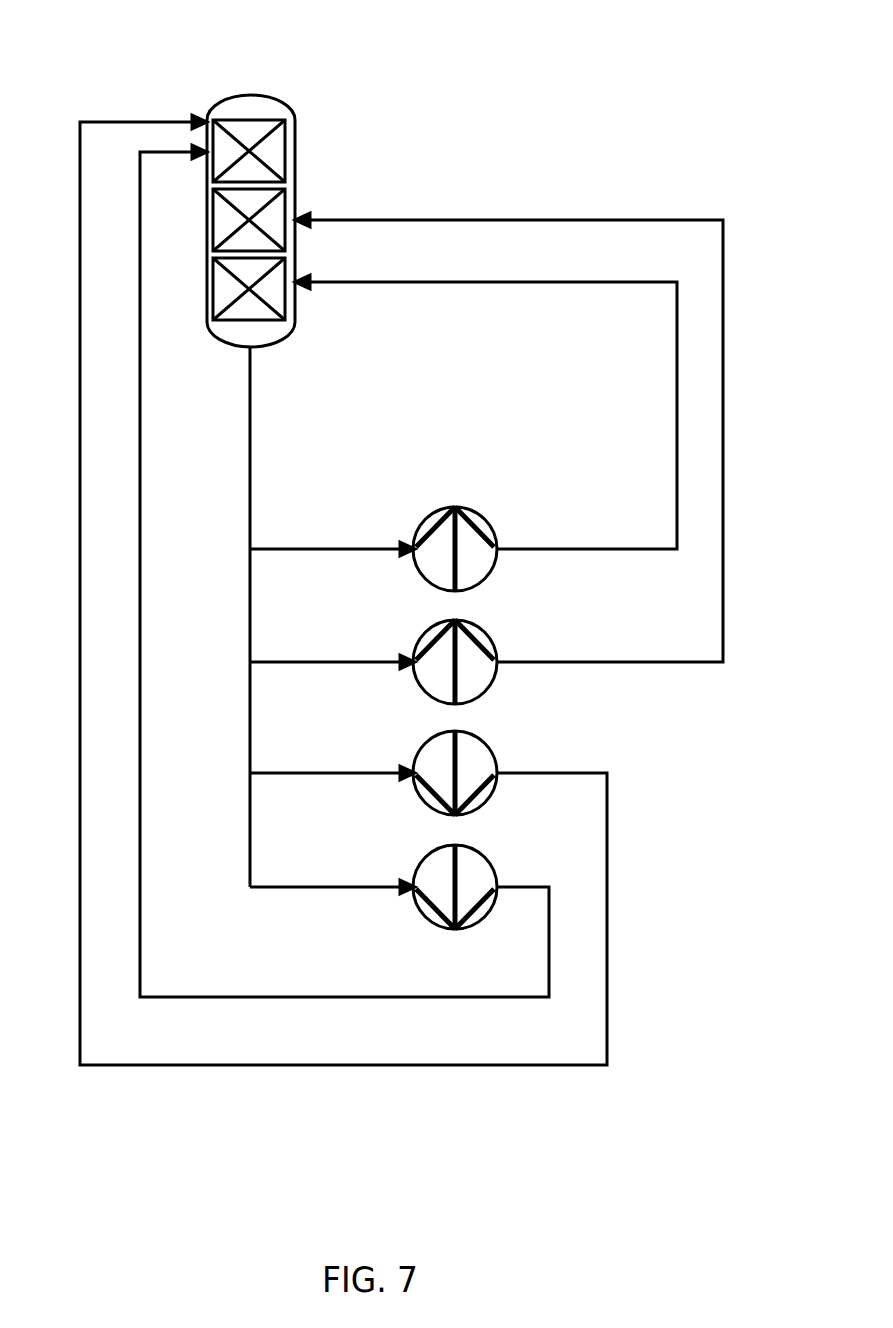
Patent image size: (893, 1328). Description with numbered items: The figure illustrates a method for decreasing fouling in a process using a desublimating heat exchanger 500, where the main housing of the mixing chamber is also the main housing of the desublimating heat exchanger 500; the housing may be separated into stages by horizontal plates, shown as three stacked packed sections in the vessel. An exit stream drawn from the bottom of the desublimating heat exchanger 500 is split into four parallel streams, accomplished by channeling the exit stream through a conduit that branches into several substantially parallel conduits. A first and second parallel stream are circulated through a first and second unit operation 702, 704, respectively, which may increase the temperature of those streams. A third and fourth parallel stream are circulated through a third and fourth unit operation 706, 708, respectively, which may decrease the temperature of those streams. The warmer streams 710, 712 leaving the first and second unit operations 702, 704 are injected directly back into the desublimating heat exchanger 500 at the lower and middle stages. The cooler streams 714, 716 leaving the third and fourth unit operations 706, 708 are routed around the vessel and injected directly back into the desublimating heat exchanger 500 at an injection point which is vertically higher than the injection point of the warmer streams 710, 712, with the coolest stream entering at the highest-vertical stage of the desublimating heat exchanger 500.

The desublimating heat exchanger 500 is at (250, 92).
The first unit operation 702 is at (457, 507).
The second unit operation 704 is at (432, 636).
The third unit operation 706 is at (434, 746).
The fourth unit operation 708 is at (434, 859).
The warmer stream 710 is at (425, 285).
The warmer stream 712 is at (463, 220).
The cooler stream 714 is at (272, 1067).
The cooler stream 716 is at (275, 995).